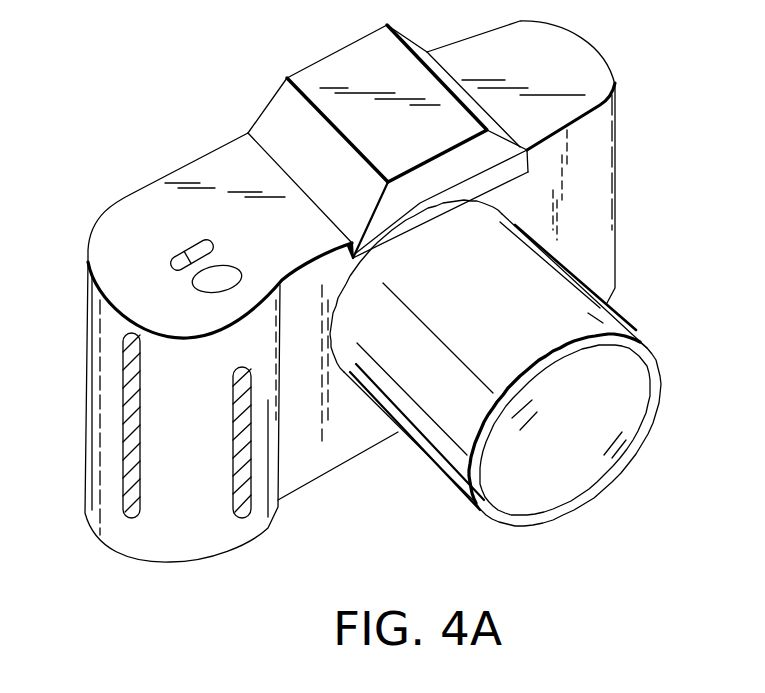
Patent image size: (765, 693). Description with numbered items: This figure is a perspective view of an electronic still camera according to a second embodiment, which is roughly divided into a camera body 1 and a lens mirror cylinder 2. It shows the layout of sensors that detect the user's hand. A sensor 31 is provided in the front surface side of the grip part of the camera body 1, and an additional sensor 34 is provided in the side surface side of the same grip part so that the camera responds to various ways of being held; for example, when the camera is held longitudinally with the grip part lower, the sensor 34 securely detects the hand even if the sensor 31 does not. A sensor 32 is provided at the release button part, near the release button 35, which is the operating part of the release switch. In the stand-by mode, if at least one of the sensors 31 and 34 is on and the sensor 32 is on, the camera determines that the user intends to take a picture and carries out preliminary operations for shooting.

The camera body 1 is at (568, 62).
The lens mirror cylinder 2 is at (607, 306).
The sensor 31 is at (238, 517).
The sensor 32 is at (178, 236).
The sensor 34 is at (131, 517).
The release button 35 is at (203, 283).